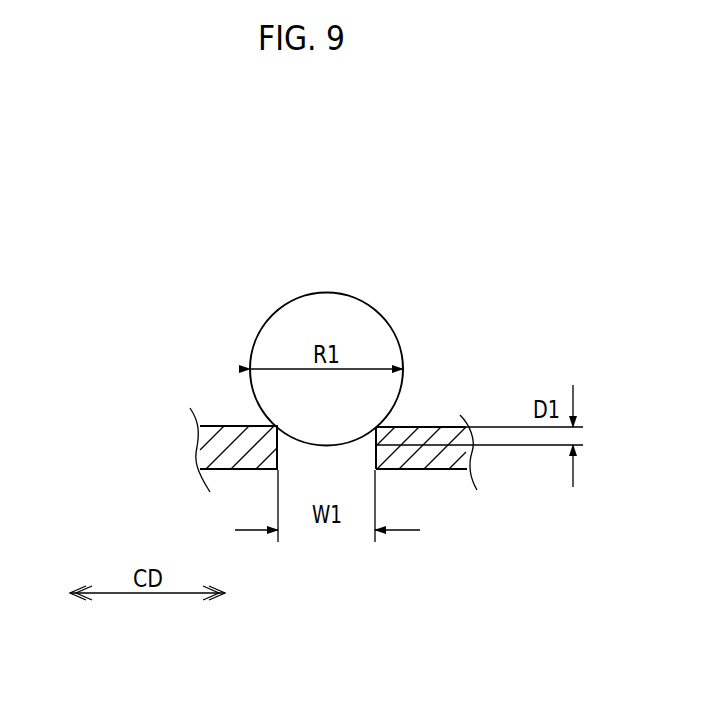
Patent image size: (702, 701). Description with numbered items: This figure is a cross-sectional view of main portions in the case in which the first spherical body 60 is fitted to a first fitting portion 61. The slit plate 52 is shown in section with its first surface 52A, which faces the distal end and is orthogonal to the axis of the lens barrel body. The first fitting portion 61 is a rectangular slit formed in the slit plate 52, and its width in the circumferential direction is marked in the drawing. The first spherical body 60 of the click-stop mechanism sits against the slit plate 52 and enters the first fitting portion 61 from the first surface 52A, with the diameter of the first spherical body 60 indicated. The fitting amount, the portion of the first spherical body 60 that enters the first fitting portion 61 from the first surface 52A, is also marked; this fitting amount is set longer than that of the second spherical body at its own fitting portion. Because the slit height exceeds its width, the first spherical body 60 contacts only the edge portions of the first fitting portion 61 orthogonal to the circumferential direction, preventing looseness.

The slit plate 52 is at (215, 453).
The first surface 52A is at (213, 426).
The first spherical body 60 is at (320, 310).
The first fitting portion 61 is at (373, 465).